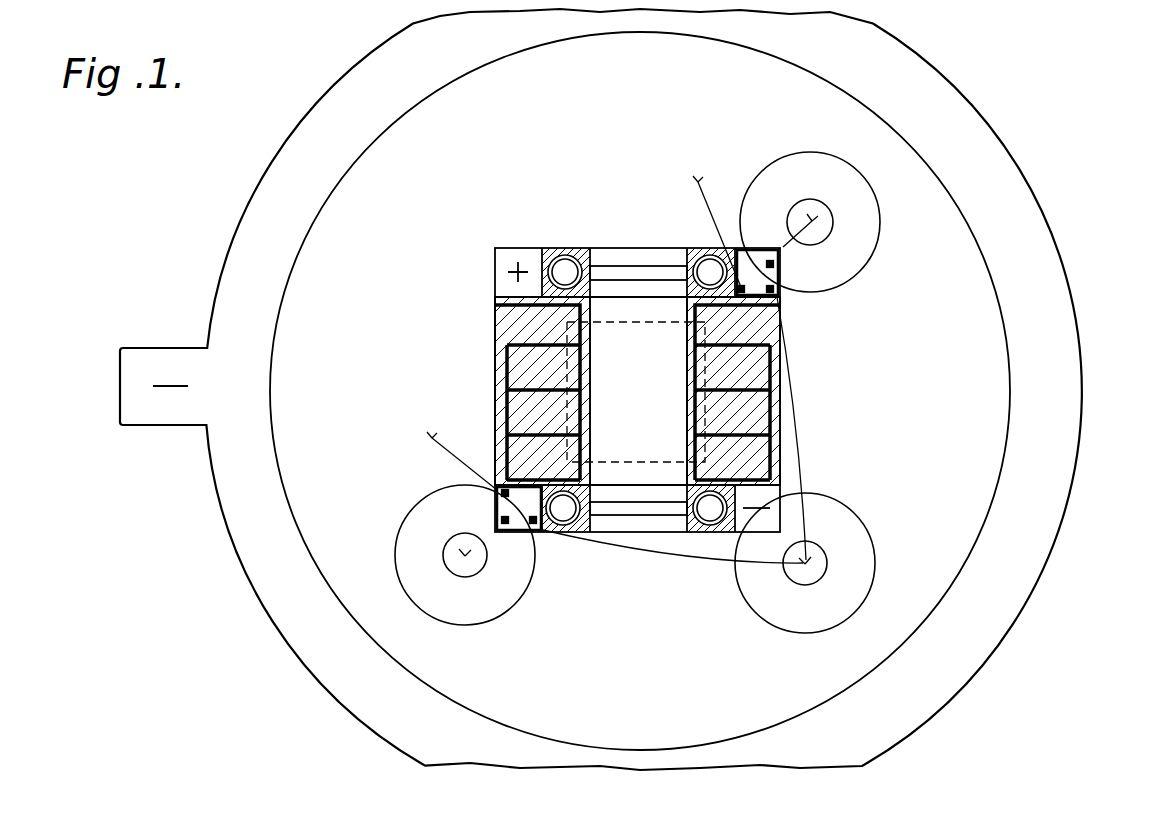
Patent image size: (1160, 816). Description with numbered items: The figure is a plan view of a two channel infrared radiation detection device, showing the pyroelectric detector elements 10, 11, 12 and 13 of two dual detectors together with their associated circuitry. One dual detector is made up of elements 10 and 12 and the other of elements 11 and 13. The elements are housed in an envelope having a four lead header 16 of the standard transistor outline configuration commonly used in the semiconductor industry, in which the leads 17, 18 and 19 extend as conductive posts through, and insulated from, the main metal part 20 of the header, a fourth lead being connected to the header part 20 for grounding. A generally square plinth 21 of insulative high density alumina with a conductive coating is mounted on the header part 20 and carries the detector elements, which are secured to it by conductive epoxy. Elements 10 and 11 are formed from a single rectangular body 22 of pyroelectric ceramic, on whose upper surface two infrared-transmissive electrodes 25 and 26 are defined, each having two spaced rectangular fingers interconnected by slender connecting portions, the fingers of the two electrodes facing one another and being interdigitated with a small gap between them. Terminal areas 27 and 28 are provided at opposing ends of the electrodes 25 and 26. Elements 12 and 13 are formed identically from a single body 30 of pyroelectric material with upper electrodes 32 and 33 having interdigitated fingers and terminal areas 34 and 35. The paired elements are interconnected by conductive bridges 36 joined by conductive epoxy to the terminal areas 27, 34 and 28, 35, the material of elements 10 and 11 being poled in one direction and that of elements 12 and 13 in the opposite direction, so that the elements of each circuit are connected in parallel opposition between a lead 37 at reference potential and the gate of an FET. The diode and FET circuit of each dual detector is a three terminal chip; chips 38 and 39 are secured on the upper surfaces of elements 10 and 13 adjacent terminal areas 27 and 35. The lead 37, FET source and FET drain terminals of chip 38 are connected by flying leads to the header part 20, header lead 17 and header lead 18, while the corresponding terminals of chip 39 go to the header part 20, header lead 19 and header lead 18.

The pyroelectric detector element 10 is at (497, 330).
The pyroelectric detector element 11 is at (573, 375).
The pyroelectric detector element 12 is at (700, 417).
The pyroelectric detector element 13 is at (757, 368).
The four lead header 16 is at (1050, 267).
The header lead 17 is at (465, 556).
The header lead 18 is at (805, 565).
The header lead 19 is at (823, 200).
The main metal part of the header 20 is at (1000, 432).
The plinth 21 is at (605, 248).
The rectangular body of pyroelectric ceramic material 22 is at (497, 390).
The electrode 25 is at (495, 302).
The electrode 26 is at (580, 347).
The terminal area 27 is at (587, 533).
The terminal area 28 is at (548, 248).
The body of pyroelectric material 30 is at (782, 320).
The upper electrode 32 is at (693, 327).
The upper electrode 33 is at (772, 462).
The terminal area 34 is at (722, 533).
The terminal area 35 is at (690, 250).
The conductive bridges 36 is at (594, 262).
The lead 37 is at (700, 180).
The chip 38 is at (520, 522).
The chip 39 is at (783, 278).